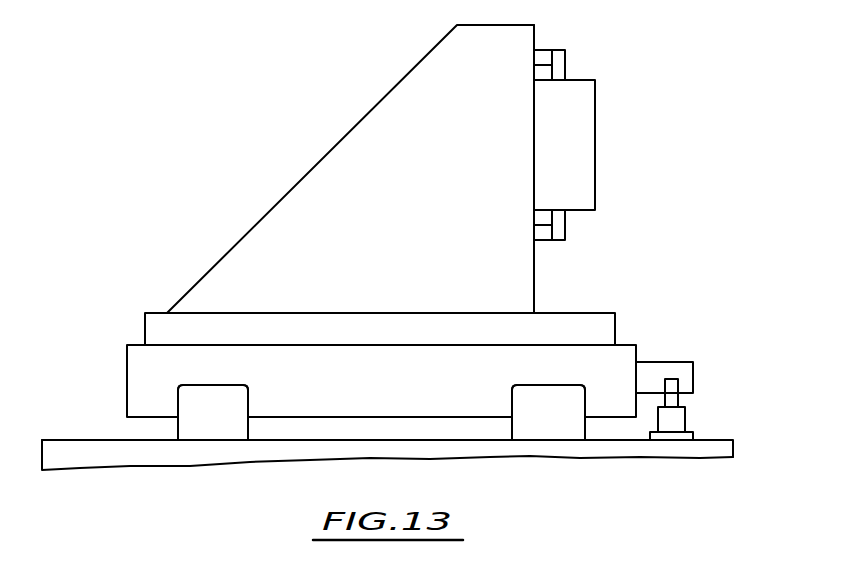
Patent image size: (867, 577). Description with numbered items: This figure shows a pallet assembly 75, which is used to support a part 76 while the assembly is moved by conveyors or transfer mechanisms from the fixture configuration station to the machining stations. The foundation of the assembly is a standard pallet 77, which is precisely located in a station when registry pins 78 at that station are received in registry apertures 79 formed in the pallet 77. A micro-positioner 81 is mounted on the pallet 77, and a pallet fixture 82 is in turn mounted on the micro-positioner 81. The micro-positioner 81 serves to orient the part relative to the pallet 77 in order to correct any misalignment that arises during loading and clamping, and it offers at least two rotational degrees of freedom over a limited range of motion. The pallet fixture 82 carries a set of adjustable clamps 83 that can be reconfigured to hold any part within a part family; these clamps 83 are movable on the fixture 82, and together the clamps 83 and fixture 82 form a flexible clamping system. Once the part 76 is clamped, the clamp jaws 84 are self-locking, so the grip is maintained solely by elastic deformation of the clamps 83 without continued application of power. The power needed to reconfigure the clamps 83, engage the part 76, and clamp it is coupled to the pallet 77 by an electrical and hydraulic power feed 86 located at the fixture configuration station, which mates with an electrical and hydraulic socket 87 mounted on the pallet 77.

The pallet assembly 75 is at (218, 197).
The part 76 is at (590, 155).
The standard pallet 77 is at (142, 368).
The registry pins 78 is at (190, 427).
The registry apertures 79 is at (252, 403).
The micro-positioner 81 is at (160, 320).
The pallet fixture 82 is at (523, 288).
The adjustable clamps 83 is at (542, 44).
The clamp jaws 84 is at (567, 62).
The electrical and hydraulic power feed 86 is at (678, 418).
The electrical and hydraulic socket 87 is at (685, 367).